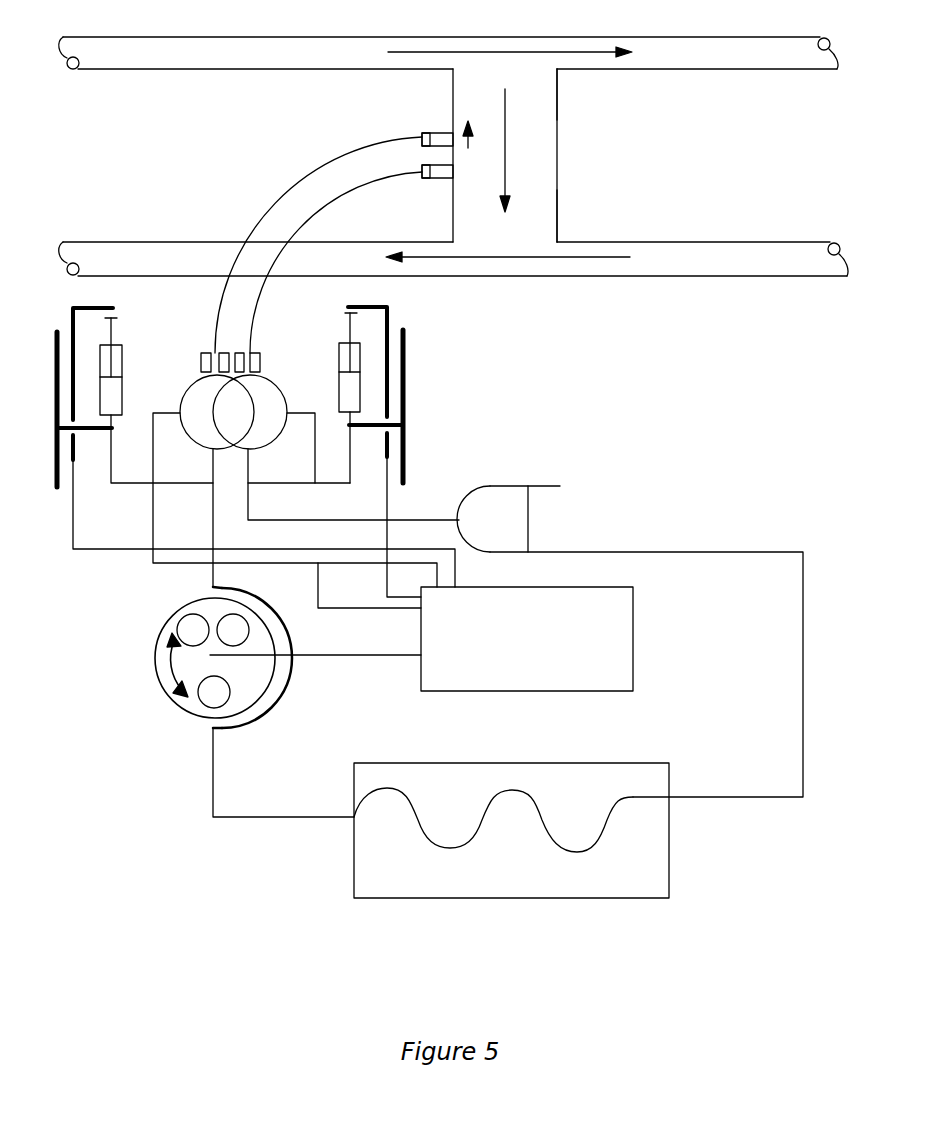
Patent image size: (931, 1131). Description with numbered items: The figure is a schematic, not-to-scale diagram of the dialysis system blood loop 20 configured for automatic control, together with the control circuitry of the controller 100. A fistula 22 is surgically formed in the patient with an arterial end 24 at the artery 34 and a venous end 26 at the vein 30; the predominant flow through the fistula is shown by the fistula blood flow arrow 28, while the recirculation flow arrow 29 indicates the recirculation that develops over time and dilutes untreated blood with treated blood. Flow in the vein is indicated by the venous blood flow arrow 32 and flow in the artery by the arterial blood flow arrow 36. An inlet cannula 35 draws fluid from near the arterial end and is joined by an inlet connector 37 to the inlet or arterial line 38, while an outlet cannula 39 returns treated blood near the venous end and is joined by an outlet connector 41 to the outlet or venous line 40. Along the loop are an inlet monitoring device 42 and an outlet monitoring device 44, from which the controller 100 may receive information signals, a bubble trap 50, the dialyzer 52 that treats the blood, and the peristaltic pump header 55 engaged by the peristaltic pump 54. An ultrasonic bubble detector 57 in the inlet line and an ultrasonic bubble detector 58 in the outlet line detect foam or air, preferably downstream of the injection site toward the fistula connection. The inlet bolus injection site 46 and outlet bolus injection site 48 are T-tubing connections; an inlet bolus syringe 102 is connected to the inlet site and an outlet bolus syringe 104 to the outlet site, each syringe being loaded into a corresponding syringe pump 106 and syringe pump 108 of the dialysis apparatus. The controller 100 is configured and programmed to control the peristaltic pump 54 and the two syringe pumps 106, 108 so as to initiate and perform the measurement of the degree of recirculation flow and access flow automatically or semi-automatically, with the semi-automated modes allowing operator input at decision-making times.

The blood loop 20 is at (645, 552).
The fistula 22 is at (557, 135).
The arterial end 24 is at (557, 70).
The venous end 26 is at (558, 233).
The fistula blood flow arrow 28 is at (505, 168).
The recirculation flow arrow 29 is at (490, 148).
The vein 30 is at (728, 273).
The venous blood flow arrow 32 is at (505, 258).
The artery 34 is at (742, 69).
The inlet cannula 35 is at (440, 137).
The arterial blood flow arrow 36 is at (478, 53).
The inlet connector 37 is at (422, 135).
The inlet or arterial line 38 is at (215, 330).
The outlet cannula 39 is at (447, 173).
The outlet or venous line 40 is at (258, 286).
The outlet connector 41 is at (422, 177).
The inlet monitoring device 42 is at (180, 412).
The outlet monitoring device 44 is at (278, 387).
The inlet bolus injection site 46 is at (177, 483).
The outlet bolus injection site 48 is at (278, 483).
The bubble trap 50 is at (505, 485).
The dialyzer 52 is at (546, 821).
The peristaltic pump 54 is at (155, 660).
The peristaltic pump header 55 is at (288, 683).
The ultrasonic bubble detector 57 is at (200, 362).
The ultrasonic bubble detector 58 is at (260, 360).
The controller 100 is at (633, 653).
The inlet bolus syringe 102 is at (123, 352).
The outlet bolus syringe 104 is at (339, 344).
The syringe pump 106 is at (55, 362).
The syringe pump 108 is at (405, 375).